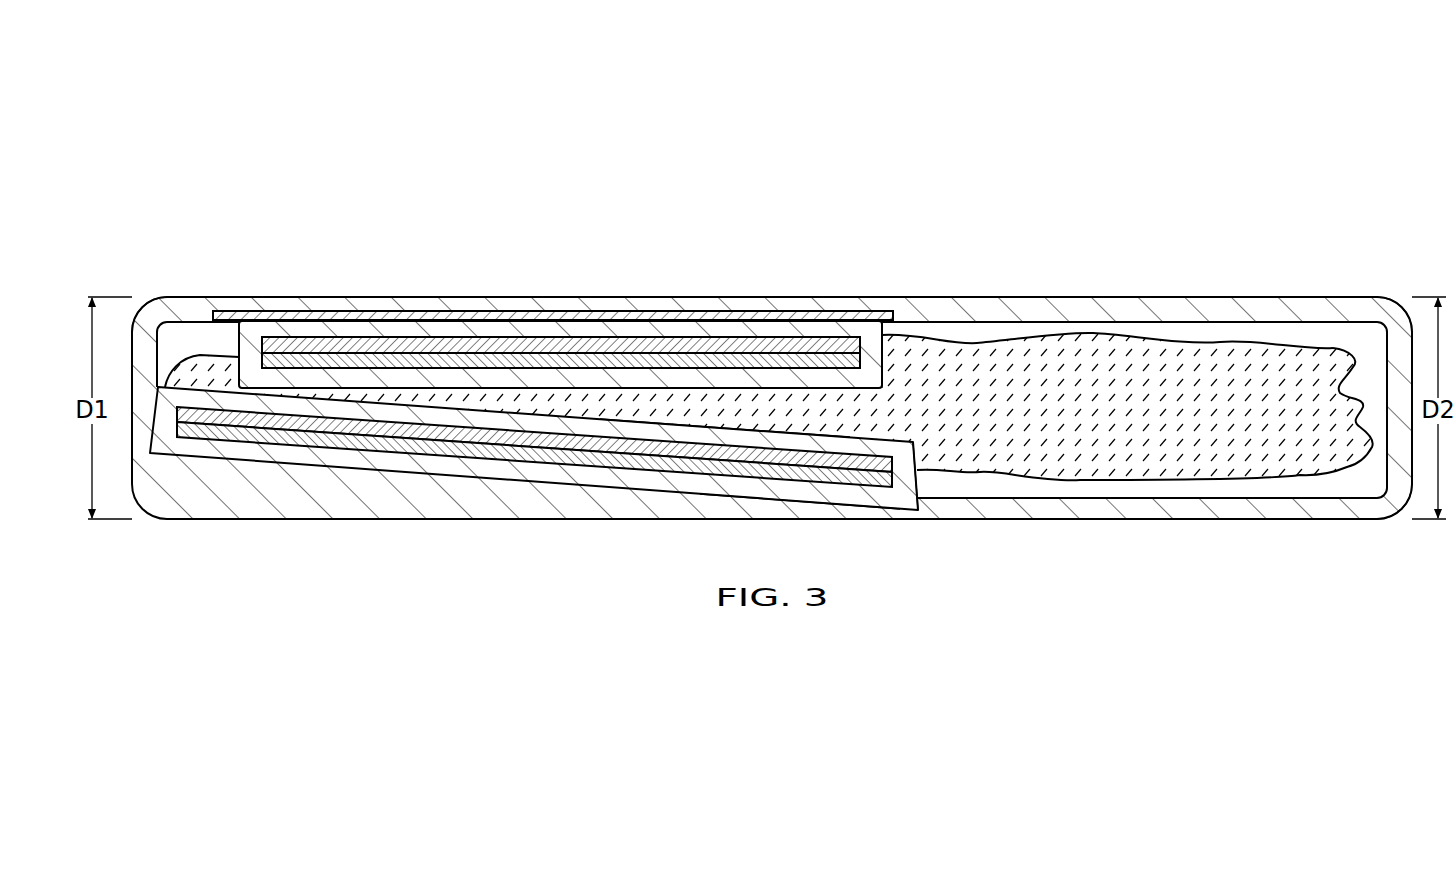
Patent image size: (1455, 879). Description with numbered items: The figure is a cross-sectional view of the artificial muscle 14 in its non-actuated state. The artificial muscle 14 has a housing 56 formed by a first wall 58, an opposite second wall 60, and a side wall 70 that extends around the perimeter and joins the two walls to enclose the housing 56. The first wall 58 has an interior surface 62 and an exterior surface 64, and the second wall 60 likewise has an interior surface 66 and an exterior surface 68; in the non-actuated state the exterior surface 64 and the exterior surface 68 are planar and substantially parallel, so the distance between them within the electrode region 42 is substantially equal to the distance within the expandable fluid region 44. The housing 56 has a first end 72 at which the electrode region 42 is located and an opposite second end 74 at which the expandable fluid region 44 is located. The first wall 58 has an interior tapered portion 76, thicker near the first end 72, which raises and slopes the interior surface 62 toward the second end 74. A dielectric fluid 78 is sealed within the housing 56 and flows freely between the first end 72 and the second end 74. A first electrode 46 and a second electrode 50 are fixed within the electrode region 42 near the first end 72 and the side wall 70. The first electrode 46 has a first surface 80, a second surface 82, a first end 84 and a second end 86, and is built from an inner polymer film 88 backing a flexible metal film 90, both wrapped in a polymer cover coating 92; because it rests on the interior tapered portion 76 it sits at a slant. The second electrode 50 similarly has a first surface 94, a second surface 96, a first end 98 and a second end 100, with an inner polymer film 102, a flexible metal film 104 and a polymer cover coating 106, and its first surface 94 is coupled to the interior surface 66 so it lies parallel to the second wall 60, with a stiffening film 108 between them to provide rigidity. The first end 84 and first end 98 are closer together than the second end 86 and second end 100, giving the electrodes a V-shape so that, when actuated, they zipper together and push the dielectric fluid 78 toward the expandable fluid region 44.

The artificial muscle 14 is at (932, 128).
The electrode region 42 is at (376, 269).
The expandable fluid region 44 is at (1280, 235).
The first electrode 46 is at (222, 474).
The second electrode 50 is at (204, 334).
The housing 56 is at (1113, 297).
The first wall 58 is at (1238, 518).
The second wall 60 is at (1163, 303).
The interior surface 62 is at (1062, 491).
The exterior surface 64 is at (1143, 520).
The interior surface 66 is at (1020, 322).
The exterior surface 68 is at (968, 297).
The side wall 70 is at (132, 331).
The first end 72 is at (132, 410).
The second end 74 is at (1413, 480).
The interior tapered portion 76 is at (397, 522).
The dielectric fluid 78 is at (1300, 468).
The first surface 80 is at (613, 481).
The second surface 82 is at (750, 420).
The first end 84 is at (147, 431).
The second end 86 is at (918, 488).
The inner polymer film 88 is at (523, 458).
The flexible metal film 90 is at (354, 430).
The polymer cover coating 92 is at (813, 497).
The first surface 94 is at (758, 323).
The second surface 96 is at (698, 400).
The first end 98 is at (219, 336).
The second end 100 is at (885, 323).
The inner polymer film 102 is at (529, 340).
The flexible metal film 104 is at (456, 352).
The polymer cover coating 106 is at (284, 330).
The stiffening film 108 is at (620, 313).